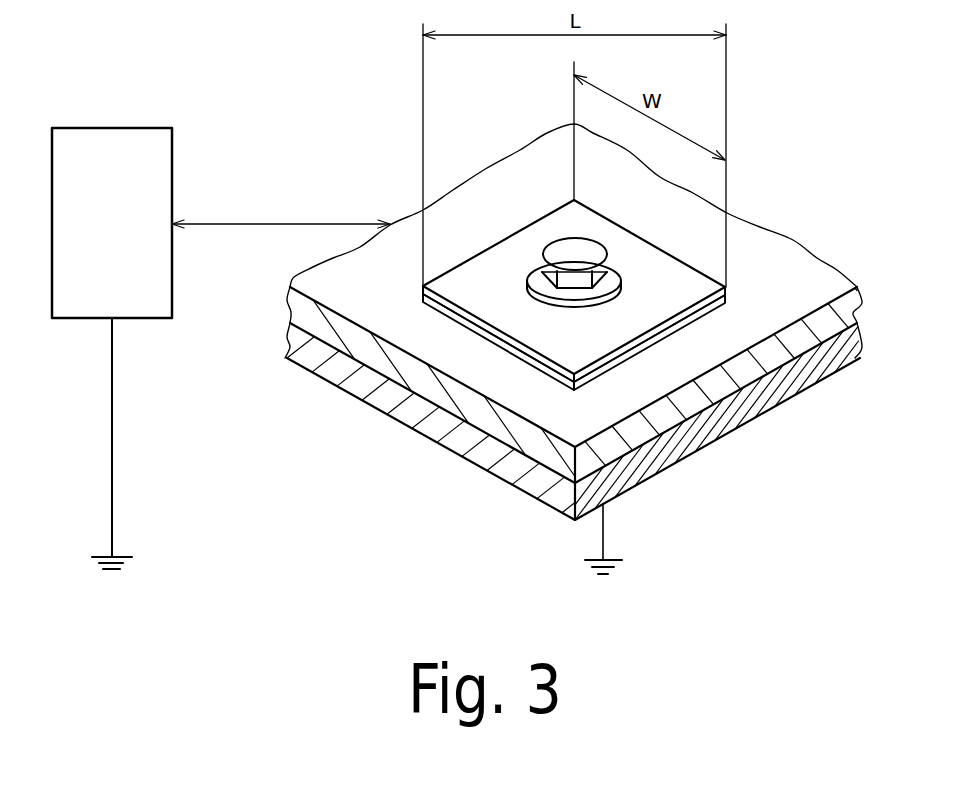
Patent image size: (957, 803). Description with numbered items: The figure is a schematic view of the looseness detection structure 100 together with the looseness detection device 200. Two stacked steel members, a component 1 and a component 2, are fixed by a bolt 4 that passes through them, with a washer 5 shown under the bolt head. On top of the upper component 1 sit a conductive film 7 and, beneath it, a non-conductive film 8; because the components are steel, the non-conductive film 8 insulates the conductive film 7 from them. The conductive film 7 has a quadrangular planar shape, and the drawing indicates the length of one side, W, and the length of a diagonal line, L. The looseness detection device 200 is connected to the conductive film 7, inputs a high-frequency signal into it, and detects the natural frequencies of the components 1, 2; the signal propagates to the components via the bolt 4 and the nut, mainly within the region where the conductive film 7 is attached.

The component 1 is at (852, 312).
The component 2 is at (853, 350).
The bolt 4 is at (585, 255).
The washer 5 is at (605, 288).
The conductive film 7 is at (673, 305).
The non-conductive film 8 is at (723, 300).
The looseness detection structure 100 is at (818, 233).
The looseness detection device 200 is at (97, 128).